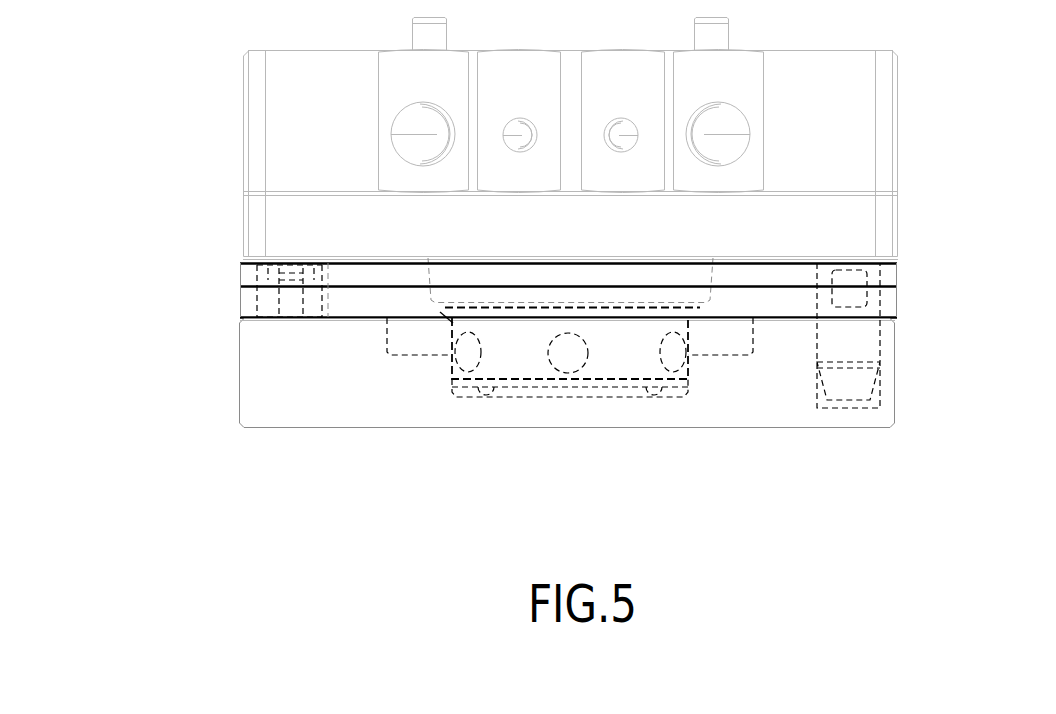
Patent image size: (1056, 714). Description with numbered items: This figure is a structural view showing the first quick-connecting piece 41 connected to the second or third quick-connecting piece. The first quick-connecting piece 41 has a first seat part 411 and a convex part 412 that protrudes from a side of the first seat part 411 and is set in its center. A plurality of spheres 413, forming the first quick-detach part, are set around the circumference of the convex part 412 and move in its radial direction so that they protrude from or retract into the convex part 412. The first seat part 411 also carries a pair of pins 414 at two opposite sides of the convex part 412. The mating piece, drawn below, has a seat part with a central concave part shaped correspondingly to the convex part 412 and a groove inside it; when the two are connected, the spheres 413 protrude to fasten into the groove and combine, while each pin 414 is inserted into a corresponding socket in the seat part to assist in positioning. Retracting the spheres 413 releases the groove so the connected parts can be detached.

The first quick-connecting piece 41 is at (569, 261).
The first seat part 411 is at (289, 108).
The convex part 412 is at (631, 362).
The spheres 413 is at (675, 356).
The pins 414 is at (872, 332).